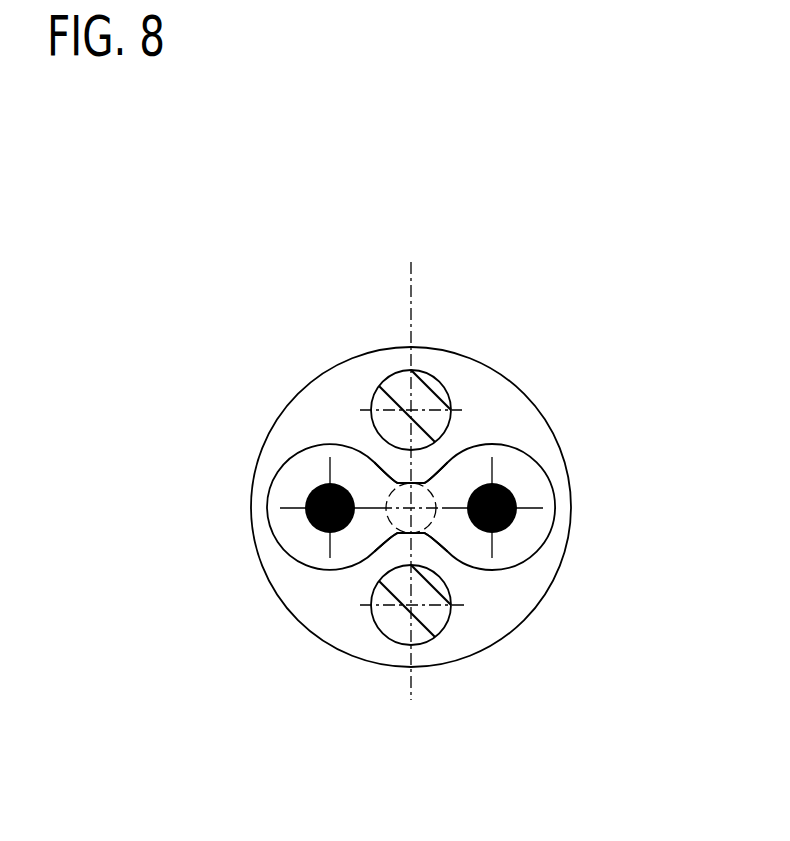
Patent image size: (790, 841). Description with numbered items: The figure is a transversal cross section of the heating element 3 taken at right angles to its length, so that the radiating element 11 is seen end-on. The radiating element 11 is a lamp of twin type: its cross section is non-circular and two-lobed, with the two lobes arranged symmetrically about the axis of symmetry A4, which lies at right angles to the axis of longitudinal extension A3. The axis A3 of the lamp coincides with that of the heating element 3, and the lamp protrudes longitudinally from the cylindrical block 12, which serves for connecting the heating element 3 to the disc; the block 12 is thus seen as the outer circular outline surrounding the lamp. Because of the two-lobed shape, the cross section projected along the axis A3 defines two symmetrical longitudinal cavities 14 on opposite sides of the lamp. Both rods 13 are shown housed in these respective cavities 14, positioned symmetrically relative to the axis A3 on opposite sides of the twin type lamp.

The heating element 3 is at (495, 333).
The radiating element 11 is at (264, 567).
The cylindrical block 12 is at (574, 596).
The rods 13 is at (386, 362).
The cavities 14 is at (358, 428).
The axis of longitudinal extension A3 is at (422, 512).
The axis of symmetry A4 is at (413, 687).